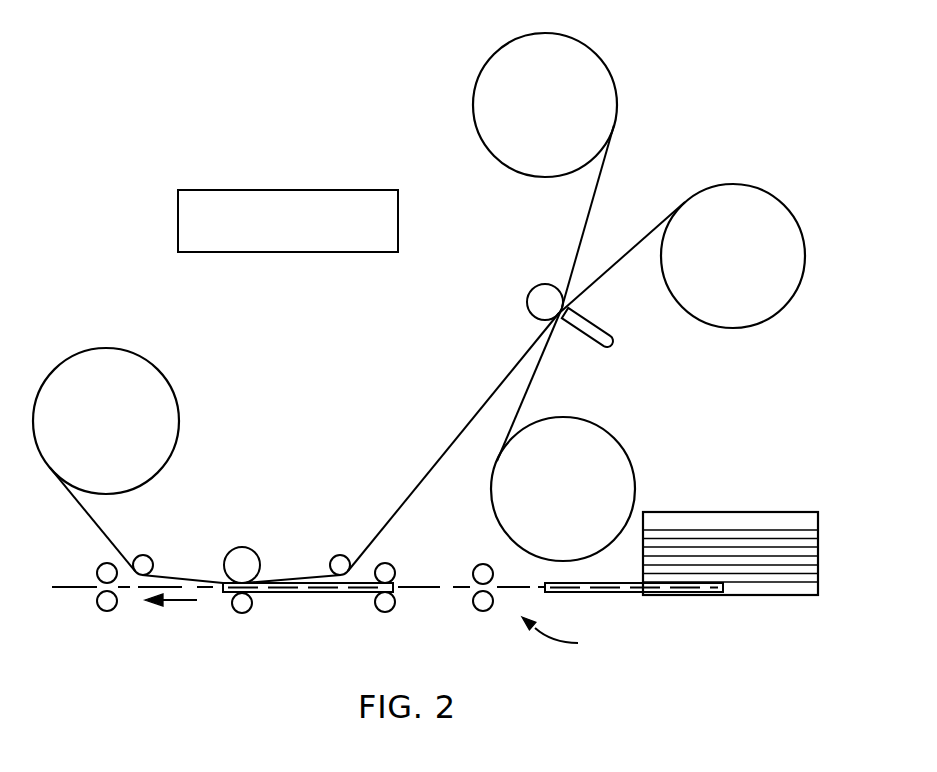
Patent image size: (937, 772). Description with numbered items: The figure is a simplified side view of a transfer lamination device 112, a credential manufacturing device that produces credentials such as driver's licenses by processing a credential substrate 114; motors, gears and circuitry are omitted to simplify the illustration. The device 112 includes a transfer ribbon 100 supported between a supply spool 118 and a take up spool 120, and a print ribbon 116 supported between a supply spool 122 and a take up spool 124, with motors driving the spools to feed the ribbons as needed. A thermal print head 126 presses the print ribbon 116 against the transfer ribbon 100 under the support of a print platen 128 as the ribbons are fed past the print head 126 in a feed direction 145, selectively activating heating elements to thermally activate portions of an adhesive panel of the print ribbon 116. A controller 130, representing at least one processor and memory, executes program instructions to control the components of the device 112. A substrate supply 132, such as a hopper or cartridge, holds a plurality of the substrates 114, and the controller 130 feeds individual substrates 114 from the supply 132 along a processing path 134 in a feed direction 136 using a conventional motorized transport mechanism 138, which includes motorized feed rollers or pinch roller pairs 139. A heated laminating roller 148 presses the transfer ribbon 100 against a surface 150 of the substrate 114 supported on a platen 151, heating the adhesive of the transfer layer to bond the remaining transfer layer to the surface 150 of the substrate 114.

The transfer ribbon 100 is at (437, 457).
The transfer lamination device 112 is at (153, 105).
The credential substrate 114 is at (300, 592).
The print ribbon 116 is at (607, 275).
The supply spool 118 is at (481, 90).
The take up spool 120 is at (103, 358).
The supply spool 122 is at (787, 290).
The take up spool 124 is at (612, 447).
The print head 126 is at (598, 338).
The print platen 128 is at (533, 296).
The controller 130 is at (215, 190).
The substrate supply 132 is at (777, 512).
The processing path 134 is at (63, 589).
The feed direction 136 is at (173, 602).
The motorized transport mechanism 138 is at (570, 637).
The pinch roller pairs 139 is at (107, 611).
The feed direction 145 is at (522, 368).
The heated laminating roller 148 is at (241, 550).
The surface 150 is at (370, 562).
The platen 151 is at (243, 613).